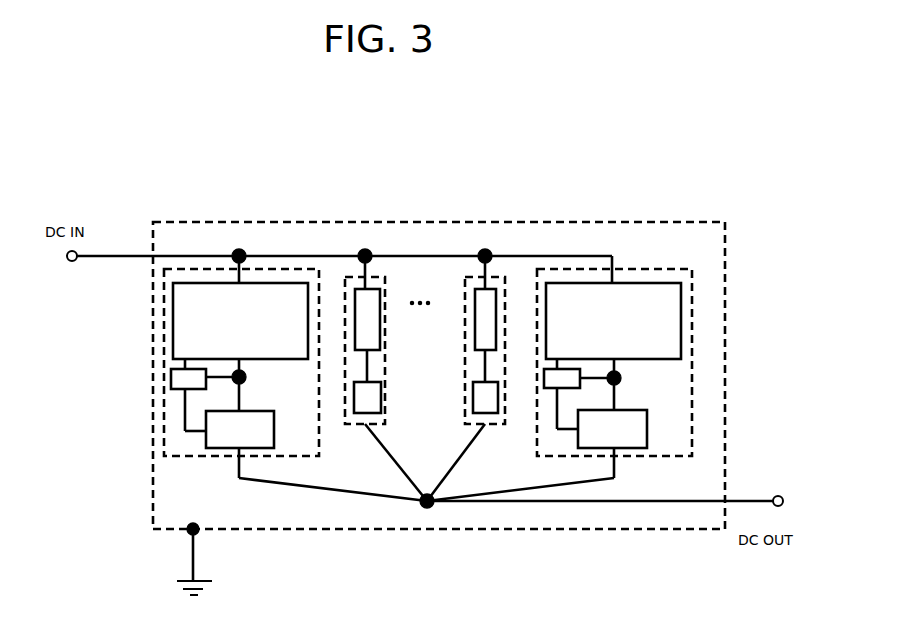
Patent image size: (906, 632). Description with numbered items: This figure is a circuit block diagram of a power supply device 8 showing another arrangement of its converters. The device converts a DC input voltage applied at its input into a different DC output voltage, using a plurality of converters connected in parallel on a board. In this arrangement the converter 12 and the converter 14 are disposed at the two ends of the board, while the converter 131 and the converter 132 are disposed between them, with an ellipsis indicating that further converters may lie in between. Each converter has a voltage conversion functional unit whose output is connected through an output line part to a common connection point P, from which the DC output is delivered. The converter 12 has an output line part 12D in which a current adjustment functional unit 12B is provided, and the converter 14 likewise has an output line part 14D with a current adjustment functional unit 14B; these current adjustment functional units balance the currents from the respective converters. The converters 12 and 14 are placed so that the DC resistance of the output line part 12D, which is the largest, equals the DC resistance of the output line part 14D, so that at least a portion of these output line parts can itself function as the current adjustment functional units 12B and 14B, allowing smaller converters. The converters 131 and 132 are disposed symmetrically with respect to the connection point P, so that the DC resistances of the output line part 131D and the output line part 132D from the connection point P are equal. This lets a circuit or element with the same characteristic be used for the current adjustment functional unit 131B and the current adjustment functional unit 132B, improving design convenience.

The power supply device 8 is at (618, 143).
The converter 12 is at (212, 268).
The current adjustment functional unit 12B is at (247, 410).
The output line part 12D is at (235, 395).
The converter 131 is at (350, 277).
The current adjustment functional unit 131B is at (357, 418).
The output line part 131D is at (390, 452).
The converter 132 is at (468, 277).
The current adjustment functional unit 132B is at (495, 418).
The output line part 132D is at (480, 368).
The converter 14 is at (638, 268).
The current adjustment functional unit 14B is at (598, 408).
The output line part 14D is at (613, 398).
The connection point P is at (427, 501).